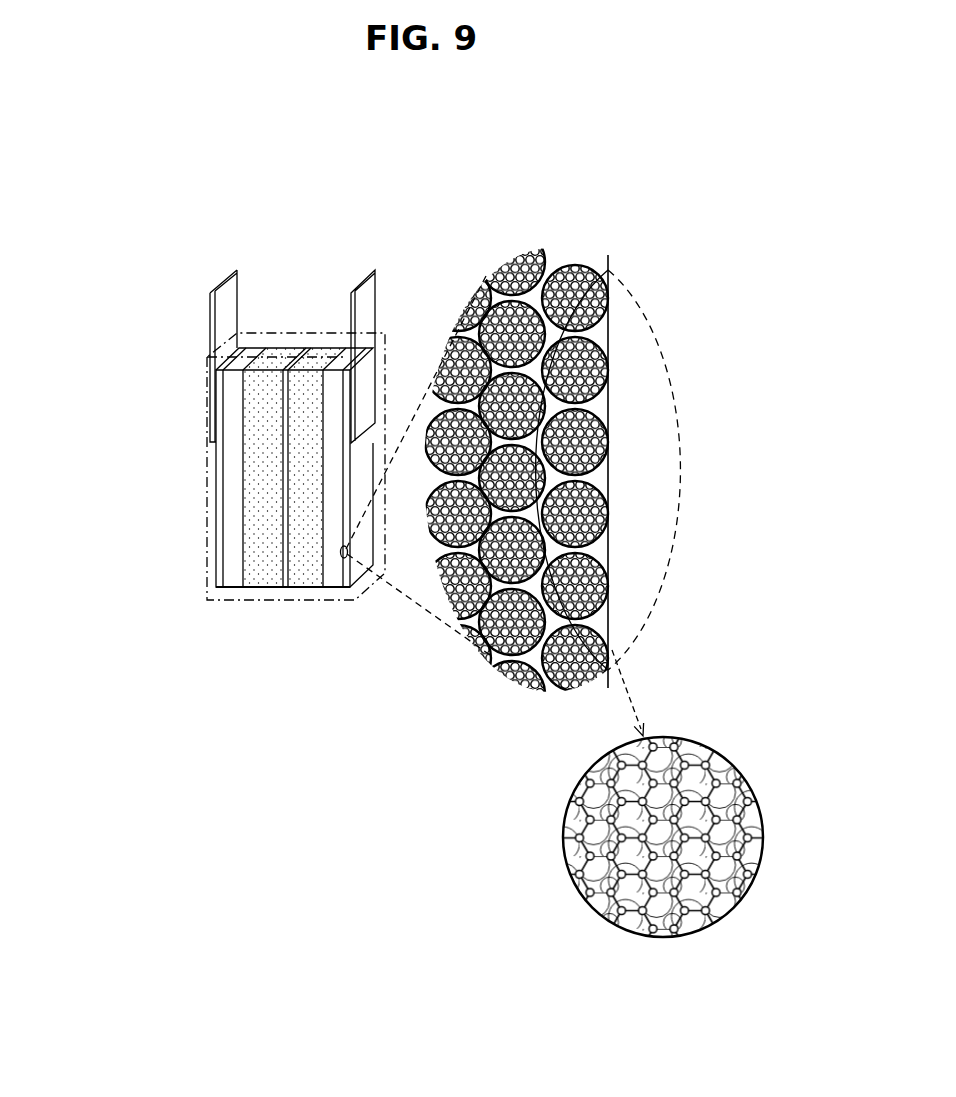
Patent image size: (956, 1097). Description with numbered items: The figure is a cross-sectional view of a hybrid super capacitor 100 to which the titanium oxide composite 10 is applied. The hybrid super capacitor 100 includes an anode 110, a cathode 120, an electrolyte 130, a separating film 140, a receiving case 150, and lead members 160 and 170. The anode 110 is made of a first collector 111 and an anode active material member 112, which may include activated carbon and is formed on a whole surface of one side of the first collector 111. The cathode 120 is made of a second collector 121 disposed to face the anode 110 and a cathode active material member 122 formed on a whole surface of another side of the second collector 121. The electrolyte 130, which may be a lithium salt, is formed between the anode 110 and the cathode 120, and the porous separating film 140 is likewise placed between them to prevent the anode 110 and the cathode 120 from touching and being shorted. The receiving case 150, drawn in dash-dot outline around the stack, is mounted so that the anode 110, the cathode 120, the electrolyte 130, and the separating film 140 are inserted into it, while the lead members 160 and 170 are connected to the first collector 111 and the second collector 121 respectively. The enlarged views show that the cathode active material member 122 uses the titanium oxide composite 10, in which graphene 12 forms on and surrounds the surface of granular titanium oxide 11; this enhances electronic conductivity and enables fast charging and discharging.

The hybrid super capacitor 100 is at (322, 212).
The anode 110 is at (170, 526).
The first collector 111 is at (218, 578).
The anode active material member 112 is at (238, 578).
The cathode 120 is at (543, 509).
The second collector 121 is at (351, 578).
The cathode active material member 122 is at (329, 578).
The electrolyte 130 is at (303, 578).
The separating film 140 is at (302, 362).
The receiving case 150 is at (276, 333).
The lead member 160 is at (229, 273).
The lead member 170 is at (363, 303).
The titanium oxide composite 10 is at (594, 583).
The granular titanium oxide 11 is at (572, 792).
The graphene 12 is at (556, 834).